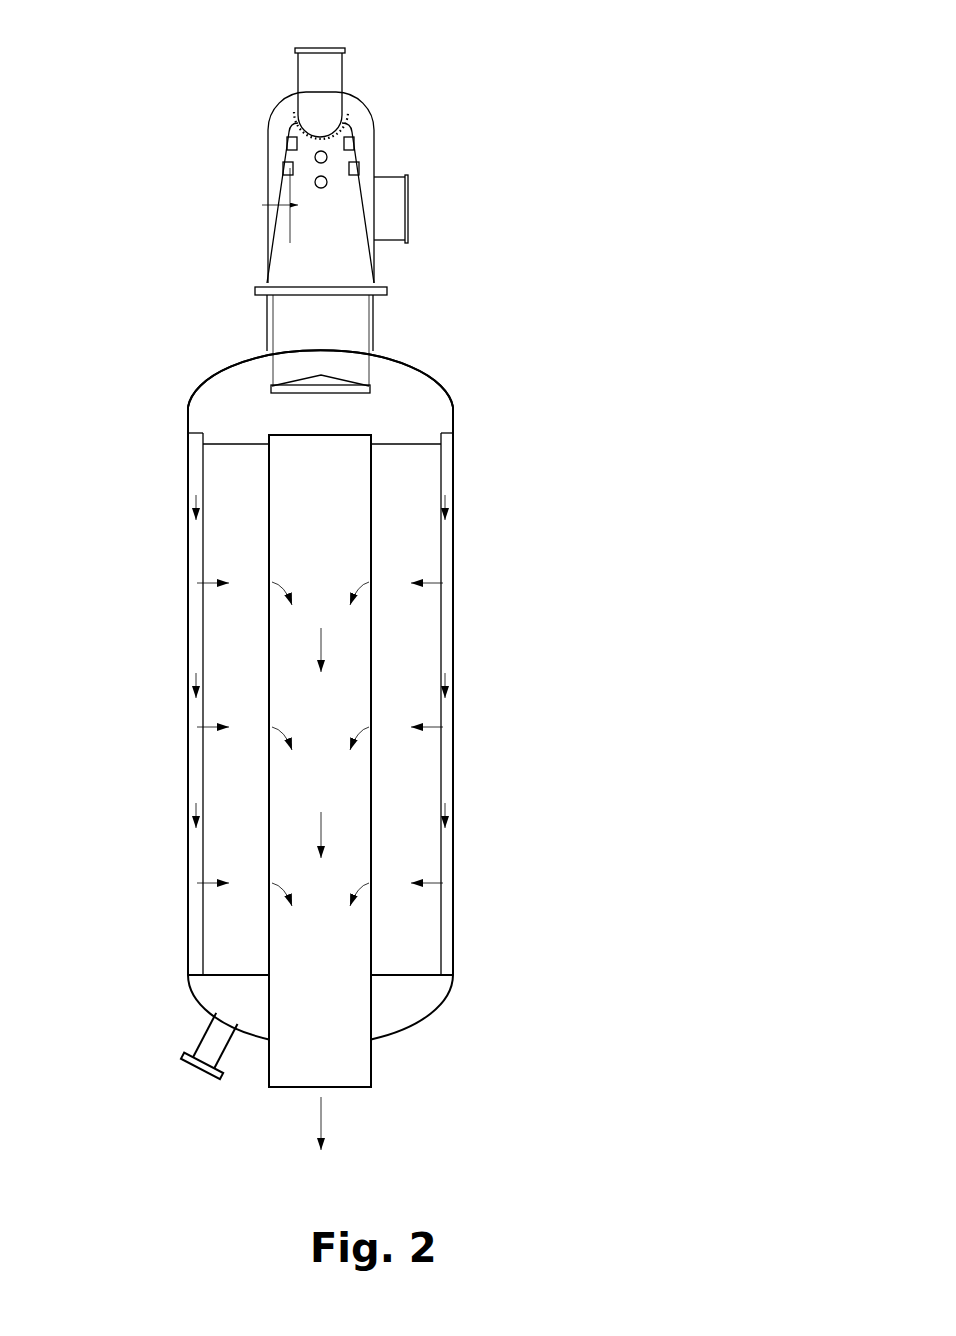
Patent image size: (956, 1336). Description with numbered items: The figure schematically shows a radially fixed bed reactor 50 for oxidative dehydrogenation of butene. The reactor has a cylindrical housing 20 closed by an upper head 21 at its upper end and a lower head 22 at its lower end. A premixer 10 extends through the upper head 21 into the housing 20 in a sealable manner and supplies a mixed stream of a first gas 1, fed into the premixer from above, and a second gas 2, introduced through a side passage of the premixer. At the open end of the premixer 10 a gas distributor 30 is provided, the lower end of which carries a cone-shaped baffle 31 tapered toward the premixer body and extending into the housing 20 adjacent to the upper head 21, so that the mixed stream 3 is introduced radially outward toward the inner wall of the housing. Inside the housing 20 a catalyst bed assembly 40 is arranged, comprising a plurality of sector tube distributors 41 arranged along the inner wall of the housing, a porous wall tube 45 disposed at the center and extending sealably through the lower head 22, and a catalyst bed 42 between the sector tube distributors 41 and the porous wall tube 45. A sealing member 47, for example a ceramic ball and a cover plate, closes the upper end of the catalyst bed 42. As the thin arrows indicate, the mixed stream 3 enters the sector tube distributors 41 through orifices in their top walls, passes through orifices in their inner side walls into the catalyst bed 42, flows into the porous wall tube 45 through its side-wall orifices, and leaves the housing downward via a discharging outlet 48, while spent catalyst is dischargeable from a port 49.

The first gas 1 is at (320, 0).
The second gas 2 is at (452, 203).
The mixed stream 3 is at (413, 388).
The premixer 10 is at (505, 142).
The cylindrical housing 20 is at (453, 745).
The upper head 21 is at (200, 380).
The lower head 22 is at (423, 1022).
The gas distributor 30 is at (380, 313).
The cone-shaped baffle 31 is at (357, 383).
The catalyst bed assembly 40 is at (418, 640).
The sector tube distributors 41 is at (197, 758).
The catalyst bed 42 is at (413, 565).
The porous wall tube 45 is at (320, 761).
The sealing member 47 is at (410, 444).
The discharging outlet 48 is at (272, 1088).
The port 49 is at (193, 1052).
The radially fixed bed reactor 50 is at (577, 350).